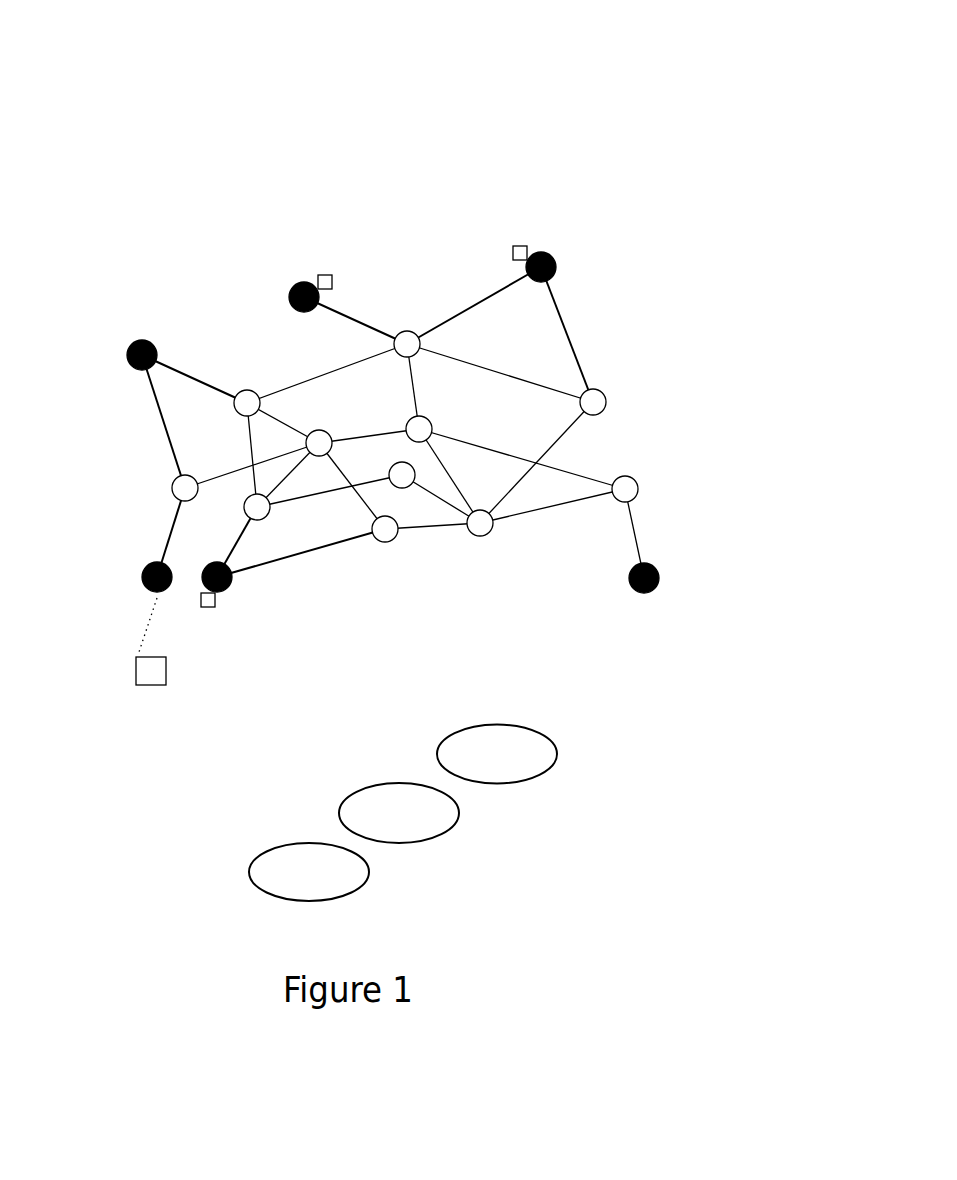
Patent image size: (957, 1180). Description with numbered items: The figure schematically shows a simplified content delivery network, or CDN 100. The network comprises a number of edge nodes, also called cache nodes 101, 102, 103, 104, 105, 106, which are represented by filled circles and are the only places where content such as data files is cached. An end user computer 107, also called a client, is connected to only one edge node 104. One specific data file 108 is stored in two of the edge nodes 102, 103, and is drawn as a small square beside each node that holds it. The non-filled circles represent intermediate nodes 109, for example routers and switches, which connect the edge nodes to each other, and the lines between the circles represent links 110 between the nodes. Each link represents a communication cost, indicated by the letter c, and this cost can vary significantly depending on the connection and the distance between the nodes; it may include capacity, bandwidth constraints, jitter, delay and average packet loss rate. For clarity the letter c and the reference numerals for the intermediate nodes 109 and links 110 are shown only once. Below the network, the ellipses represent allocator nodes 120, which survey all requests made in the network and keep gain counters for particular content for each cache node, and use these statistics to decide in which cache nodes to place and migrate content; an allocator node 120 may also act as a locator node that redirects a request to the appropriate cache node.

The content delivery network 100 is at (198, 122).
The edge node 101 is at (127, 331).
The edge node 102 is at (300, 266).
The edge node 103 is at (552, 240).
The edge node 104 is at (128, 581).
The edge node 105 is at (237, 598).
The edge node 106 is at (665, 598).
The end user computer 107 is at (158, 697).
The data file 108 is at (499, 239).
The intermediate node 109 is at (652, 476).
The link 110 is at (656, 537).
The allocator node 120 is at (384, 870).